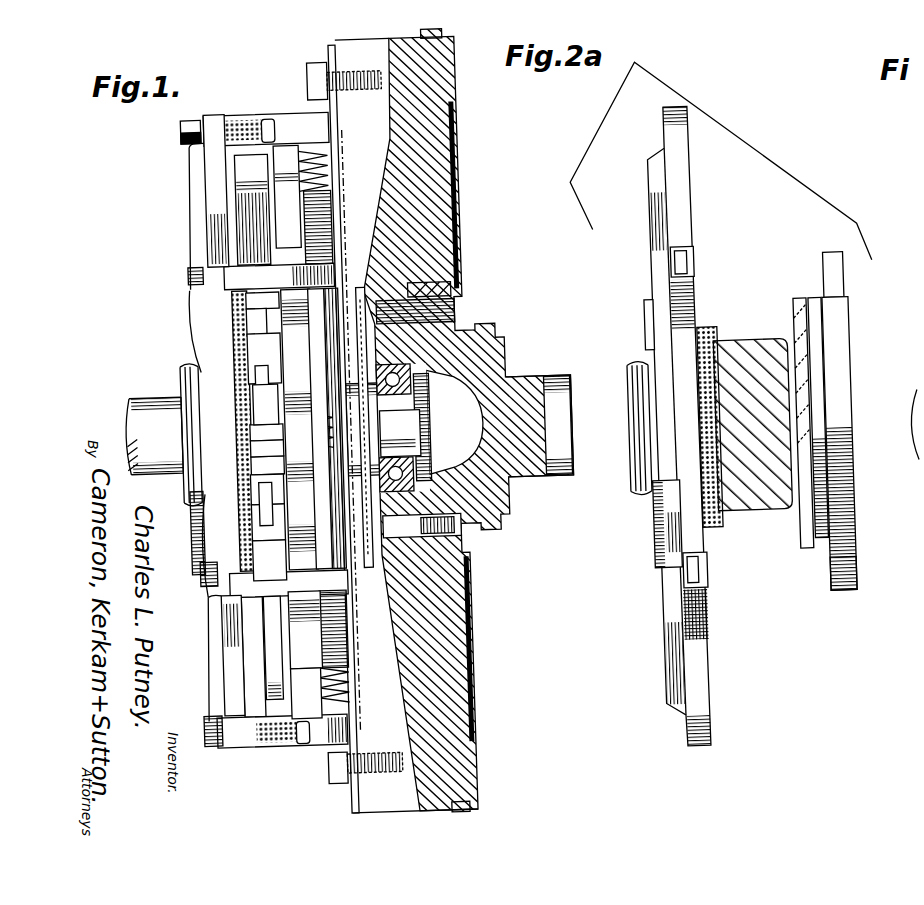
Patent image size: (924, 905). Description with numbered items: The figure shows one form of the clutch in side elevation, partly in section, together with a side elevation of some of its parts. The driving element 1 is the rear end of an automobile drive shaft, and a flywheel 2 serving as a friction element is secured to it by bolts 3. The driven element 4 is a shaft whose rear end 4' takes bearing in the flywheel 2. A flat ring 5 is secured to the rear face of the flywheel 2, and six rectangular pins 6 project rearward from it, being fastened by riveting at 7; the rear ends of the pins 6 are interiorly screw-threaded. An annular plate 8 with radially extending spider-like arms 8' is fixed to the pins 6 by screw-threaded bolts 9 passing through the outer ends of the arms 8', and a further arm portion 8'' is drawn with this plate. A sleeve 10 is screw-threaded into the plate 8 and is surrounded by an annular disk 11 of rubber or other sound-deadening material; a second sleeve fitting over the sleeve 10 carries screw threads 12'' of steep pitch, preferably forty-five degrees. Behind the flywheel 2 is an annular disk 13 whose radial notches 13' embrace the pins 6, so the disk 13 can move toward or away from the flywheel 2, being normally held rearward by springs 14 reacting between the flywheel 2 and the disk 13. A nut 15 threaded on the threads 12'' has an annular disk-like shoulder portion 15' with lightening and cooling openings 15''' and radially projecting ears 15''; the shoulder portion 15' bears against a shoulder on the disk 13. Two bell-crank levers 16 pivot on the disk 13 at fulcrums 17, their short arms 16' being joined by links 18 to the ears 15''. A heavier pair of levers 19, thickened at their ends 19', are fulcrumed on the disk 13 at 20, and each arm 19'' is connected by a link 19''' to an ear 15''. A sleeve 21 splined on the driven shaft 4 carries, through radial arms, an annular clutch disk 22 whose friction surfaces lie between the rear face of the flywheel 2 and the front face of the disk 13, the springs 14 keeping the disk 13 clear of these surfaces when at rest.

In FIG. 1, the driving element 1 is at (515, 442).
In FIG. 1, the flywheel 2 is at (339, 54).
In FIG. 1, the bolts 3 is at (238, 140).
In FIG. 1, the driven element 4 is at (153, 425).
In FIG. 1, the rear end of driven shaft 4' is at (399, 428).
In FIG. 1, the flat ring 5 is at (318, 80).
In FIG. 1, the pins 6 is at (272, 115).
In FIG. 1, the riveting 7 is at (361, 736).
In FIG. 1, the annular plate 8 is at (178, 445).
In FIG. 2A, the annular plate 8 is at (650, 524).
In FIG. 1, the spider-like arms 8' is at (210, 659).
In FIG. 2A, the spider-like arms 8' is at (692, 425).
In FIG. 1, the plate arm 8'' is at (189, 203).
In FIG. 1, the screw-threaded bolts 9 is at (203, 762).
In FIG. 1, the sleeve 10 is at (192, 367).
In FIG. 2A, the sleeve 10 is at (638, 487).
In FIG. 1, the annular disk 11 is at (239, 452).
In FIG. 2A, the annular disk 11 is at (713, 324).
In FIG. 1, the screw threads 12'' is at (264, 431).
In FIG. 2A, the screw threads 12'' is at (752, 418).
In FIG. 1, the annular disk 13 is at (345, 379).
In FIG. 1, the radial notches 13' is at (349, 500).
In FIG. 1, the springs 14 is at (323, 174).
In FIG. 2A, the nut 15 is at (847, 417).
In FIG. 2A, the annular disk-like shoulder portion 15' is at (865, 577).
In FIG. 1, the radially projecting ears 15'' is at (240, 439).
In FIG. 2A, the radially projecting ears 15'' is at (847, 421).
In FIG. 2A, the openings 15''' is at (864, 420).
In FIG. 1, the bell-crank levers 16 is at (271, 422).
In FIG. 1, the short arm 16' is at (244, 512).
In FIG. 1, the fulcrums 17 is at (258, 545).
In FIG. 1, the link 18 is at (260, 480).
In FIG. 1, the levers 19 is at (218, 313).
In FIG. 1, the thickened ends 19' is at (213, 210).
In FIG. 1, the arm 19'' is at (239, 360).
In FIG. 1, the link 19''' is at (236, 398).
In FIG. 1, the fulcrums 20 is at (248, 325).
In FIG. 1, the sleeve 21 is at (368, 393).
In FIG. 1, the annular clutch disk 22 is at (338, 640).